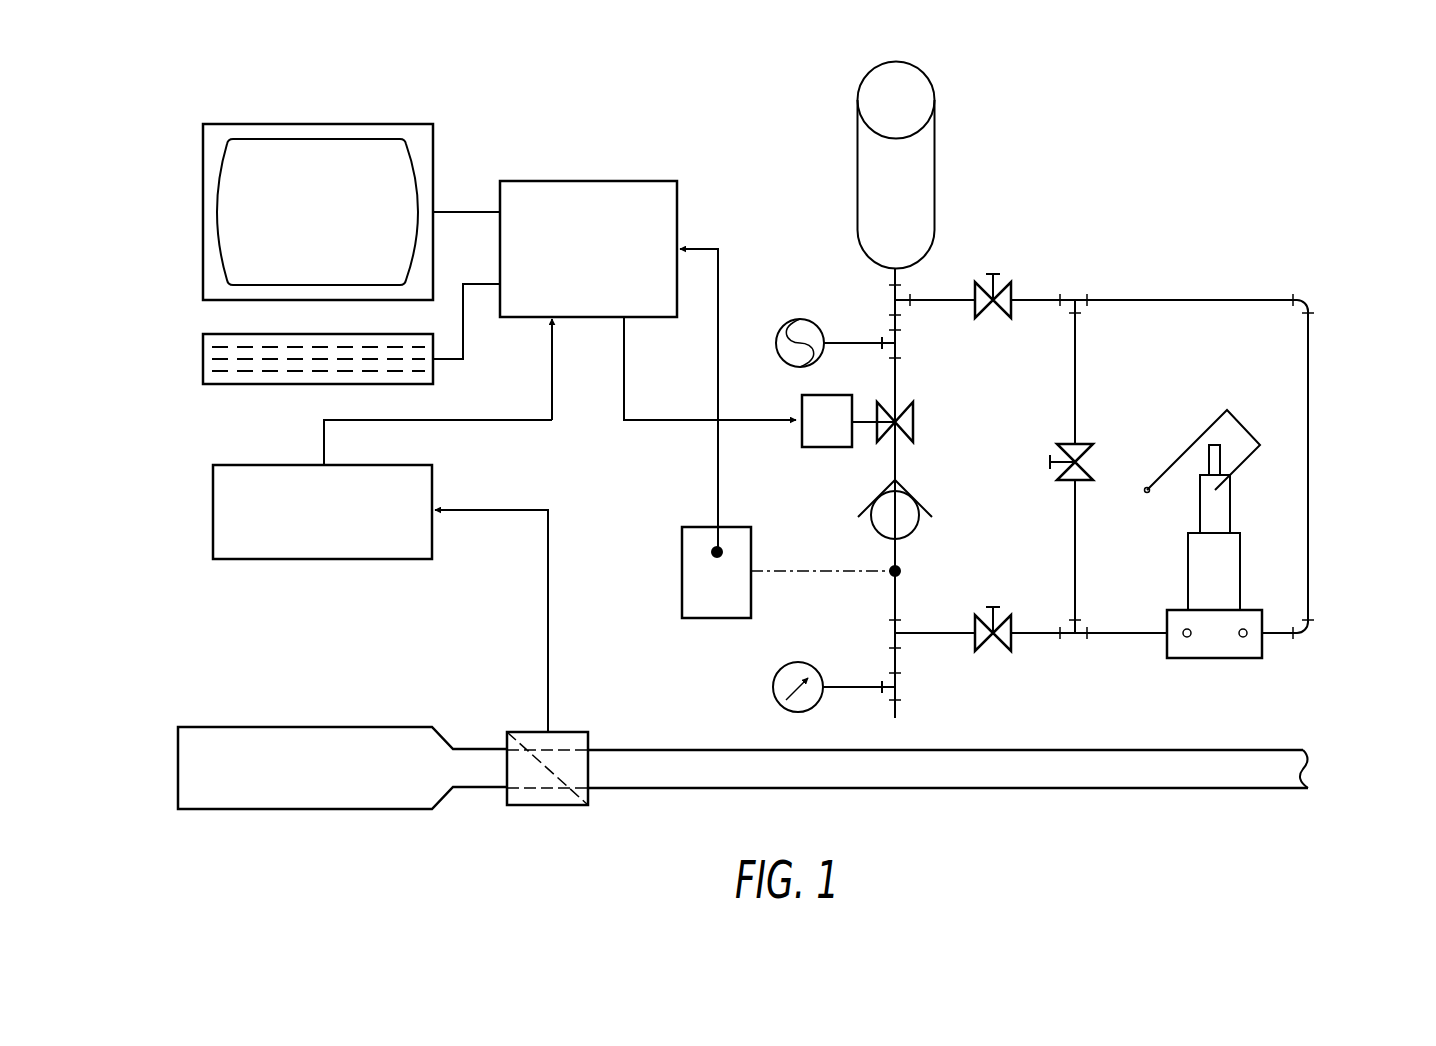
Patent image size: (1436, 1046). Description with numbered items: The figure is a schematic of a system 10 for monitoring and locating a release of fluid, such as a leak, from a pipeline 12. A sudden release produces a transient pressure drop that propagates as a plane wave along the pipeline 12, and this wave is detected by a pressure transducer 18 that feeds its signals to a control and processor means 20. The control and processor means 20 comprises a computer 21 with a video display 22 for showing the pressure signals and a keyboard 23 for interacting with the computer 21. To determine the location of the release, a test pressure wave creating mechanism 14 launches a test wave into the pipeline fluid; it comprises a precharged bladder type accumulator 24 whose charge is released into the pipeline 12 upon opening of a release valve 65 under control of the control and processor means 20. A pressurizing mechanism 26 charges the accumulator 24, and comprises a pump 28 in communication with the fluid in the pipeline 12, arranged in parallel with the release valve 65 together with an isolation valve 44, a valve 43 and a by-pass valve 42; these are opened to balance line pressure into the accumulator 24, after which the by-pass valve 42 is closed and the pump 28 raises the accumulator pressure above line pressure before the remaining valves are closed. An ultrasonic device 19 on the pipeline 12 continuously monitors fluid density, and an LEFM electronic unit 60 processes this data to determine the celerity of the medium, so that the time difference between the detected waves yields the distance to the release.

The system 10 is at (1035, 95).
The pipeline 12 is at (1187, 745).
The test pressure wave creating mechanism 14 is at (990, 200).
The pressure transducer 18 is at (680, 540).
The ultrasonic device 19 is at (585, 712).
The control and processor means 20 is at (637, 160).
The computer 21 is at (354, 241).
The video display 22 is at (307, 160).
The keyboard 23 is at (264, 393).
The accumulator 24 is at (938, 75).
The pressurizing mechanism 26 is at (1338, 378).
The pump 28 is at (1250, 553).
The by-pass valve 42 is at (1105, 432).
The valve 43 is at (1018, 657).
The isolation valve 44 is at (1012, 262).
The LEFM electronic unit 60 is at (362, 570).
The release valve 65 is at (920, 447).